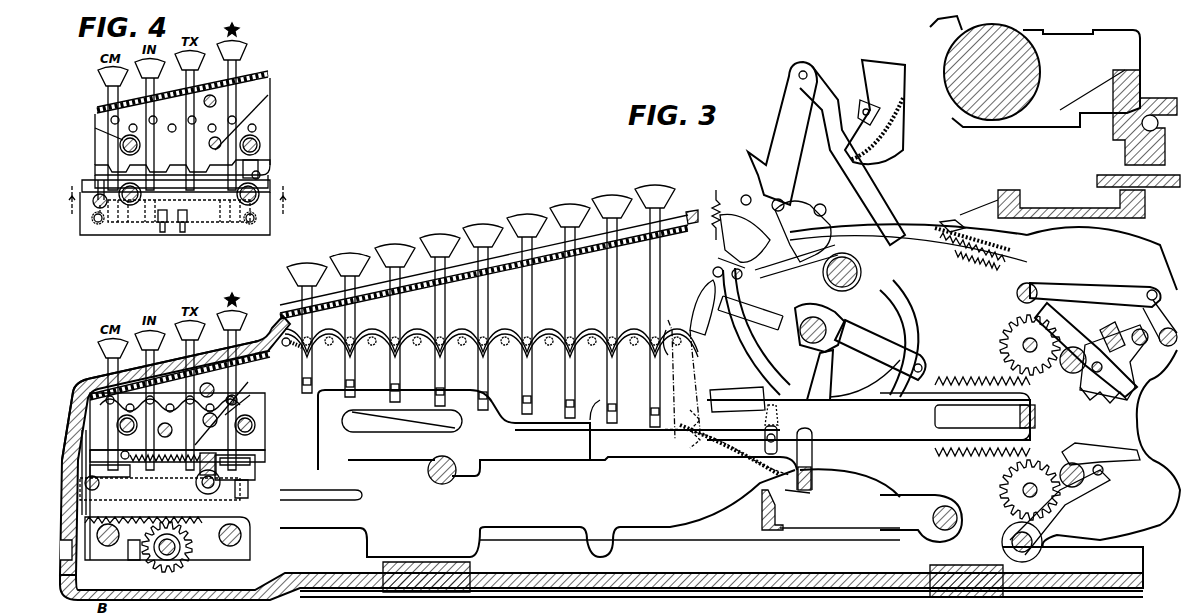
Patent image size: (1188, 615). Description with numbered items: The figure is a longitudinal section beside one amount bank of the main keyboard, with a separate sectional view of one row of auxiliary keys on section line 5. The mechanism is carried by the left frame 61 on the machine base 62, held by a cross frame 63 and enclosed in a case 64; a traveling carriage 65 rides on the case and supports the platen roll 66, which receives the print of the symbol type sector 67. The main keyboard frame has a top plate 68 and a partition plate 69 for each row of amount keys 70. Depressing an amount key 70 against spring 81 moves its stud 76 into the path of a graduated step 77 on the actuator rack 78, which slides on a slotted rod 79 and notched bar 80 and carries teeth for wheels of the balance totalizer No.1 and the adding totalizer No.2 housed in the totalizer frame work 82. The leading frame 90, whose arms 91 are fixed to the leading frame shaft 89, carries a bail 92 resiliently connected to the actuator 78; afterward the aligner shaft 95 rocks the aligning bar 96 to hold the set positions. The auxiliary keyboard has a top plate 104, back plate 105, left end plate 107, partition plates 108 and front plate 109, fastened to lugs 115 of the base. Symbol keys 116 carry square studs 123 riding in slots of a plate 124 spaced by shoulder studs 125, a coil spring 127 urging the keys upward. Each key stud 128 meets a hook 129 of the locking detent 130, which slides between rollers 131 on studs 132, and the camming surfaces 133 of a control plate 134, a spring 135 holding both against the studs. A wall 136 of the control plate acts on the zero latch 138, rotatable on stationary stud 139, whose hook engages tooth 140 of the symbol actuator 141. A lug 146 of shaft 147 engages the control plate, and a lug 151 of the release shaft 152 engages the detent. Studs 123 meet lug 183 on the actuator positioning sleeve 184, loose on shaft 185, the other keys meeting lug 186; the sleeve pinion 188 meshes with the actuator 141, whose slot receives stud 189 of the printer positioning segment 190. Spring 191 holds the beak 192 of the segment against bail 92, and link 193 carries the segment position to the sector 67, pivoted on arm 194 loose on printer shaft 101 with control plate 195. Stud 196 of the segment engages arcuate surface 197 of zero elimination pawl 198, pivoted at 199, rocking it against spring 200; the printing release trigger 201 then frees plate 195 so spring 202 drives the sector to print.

In FIG. 4, the section line 5 is at (176, 205).
In FIG. 3, the left frame 61 is at (693, 515).
In FIG. 3, the machine base 62 is at (455, 592).
In FIG. 3, the cross frame 63 is at (1010, 180).
In FIG. 3, the case 64 is at (485, 250).
In FIG. 3, the traveling carriage 65 is at (970, 125).
In FIG. 3, the platen roll 66 is at (1030, 60).
In FIG. 3, the symbol type sector 67 is at (880, 68).
In FIG. 3, the top plate 68 is at (560, 240).
In FIG. 3, the partition plate 69 is at (680, 370).
In FIG. 3, the amount keys 70 is at (345, 255).
In FIG. 3, the stud 76 is at (312, 378).
In FIG. 3, the graduated step 77 is at (510, 395).
In FIG. 3, the actuator rack 78 is at (420, 430).
In FIG. 3, the slotted rod 79 is at (428, 472).
In FIG. 3, the notched bar 80 is at (1035, 418).
In FIG. 3, the spring 81 is at (552, 337).
In FIG. 3, the totalizer frame work 82 is at (1140, 420).
In FIG. 3, the leading frame shaft 89 is at (825, 322).
In FIG. 3, the leading frame 90 is at (832, 368).
In FIG. 3, the downwardly extending arms 91 is at (812, 437).
In FIG. 3, the leading frame bail 92 is at (811, 470).
In FIG. 3, the aligner shaft 95 is at (957, 522).
In FIG. 3, the aligning bar 96 is at (762, 506).
In FIG. 3, the printer shaft 101 is at (857, 272).
In FIG. 4, the top plate 104 is at (252, 68).
In FIG. 3, the top plate 104 is at (208, 353).
In FIG. 3, the back plate 105 is at (290, 351).
In FIG. 3, the left end plate 107 is at (235, 545).
In FIG. 4, the partition plates 108 is at (270, 105).
In FIG. 3, the front plate 109 is at (72, 420).
In FIG. 3, the extending lugs 115 is at (200, 590).
In FIG. 4, the symbol keys 116 is at (98, 74).
In FIG. 3, the symbol keys 116 is at (98, 348).
In FIG. 4, the square stud 123 is at (163, 235).
In FIG. 3, the square stud 123 is at (150, 500).
In FIG. 4, the plate 124 is at (105, 232).
In FIG. 4, the shoulder studs 125 is at (98, 224).
In FIG. 3, the coil spring 127 is at (76, 398).
In FIG. 4, the stud 128 is at (95, 158).
In FIG. 3, the stud 128 is at (90, 438).
In FIG. 4, the hook 129 is at (110, 165).
In FIG. 4, the locking detent 130 is at (110, 180).
In FIG. 3, the locking detent 130 is at (172, 388).
In FIG. 4, the rollers 131 is at (283, 178).
In FIG. 4, the studs 132 is at (120, 146).
In FIG. 3, the studs 132 is at (186, 425).
In FIG. 3, the angular camming surfaces 133 is at (90, 455).
In FIG. 3, the control plate 134 is at (90, 470).
In FIG. 4, the spring 135 is at (258, 170).
In FIG. 3, the spring 135 is at (178, 443).
In FIG. 3, the wall 136 is at (240, 414).
In FIG. 3, the zero latch 138 is at (255, 475).
In FIG. 3, the stationary stud 139 is at (208, 494).
In FIG. 3, the tooth 140 is at (243, 498).
In FIG. 3, the symbol actuator 141 is at (500, 460).
In FIG. 3, the lug 146 is at (85, 484).
In FIG. 3, the shaft 147 is at (80, 500).
In FIG. 4, the lug 151 is at (222, 143).
In FIG. 3, the lug 151 is at (244, 397).
In FIG. 4, the symbol key release shaft 152 is at (268, 95).
In FIG. 3, the symbol key release shaft 152 is at (255, 372).
In FIG. 3, the lug 183 is at (150, 564).
In FIG. 3, the actuator positioning sleeve 184 is at (167, 555).
In FIG. 3, the shaft 185 is at (178, 556).
In FIG. 3, the lug 186 is at (115, 545).
In FIG. 3, the pinion 188 is at (185, 547).
In FIG. 3, the stud 189 is at (777, 425).
In FIG. 3, the printer positioning segment 190 is at (790, 358).
In FIG. 3, the spring 191 is at (705, 443).
In FIG. 3, the beak 192 is at (810, 493).
In FIG. 3, the link 193 is at (900, 230).
In FIG. 3, the arm 194 is at (780, 125).
In FIG. 3, the control plate 195 is at (805, 283).
In FIG. 3, the stud 196 is at (713, 274).
In FIG. 3, the arcuate surface 197 is at (690, 298).
In FIG. 3, the zero elimination pawl 198 is at (722, 240).
In FIG. 3, the pivot 199 is at (718, 258).
In FIG. 3, the spring 200 is at (716, 200).
In FIG. 3, the printing release trigger 201 is at (750, 313).
In FIG. 3, the spring 202 is at (985, 268).
In FIG. 3, the No. 1 or balance totalizer No.1 is at (1020, 342).
In FIG. 3, the No. 2 or adding totalizer No.2 is at (1020, 488).